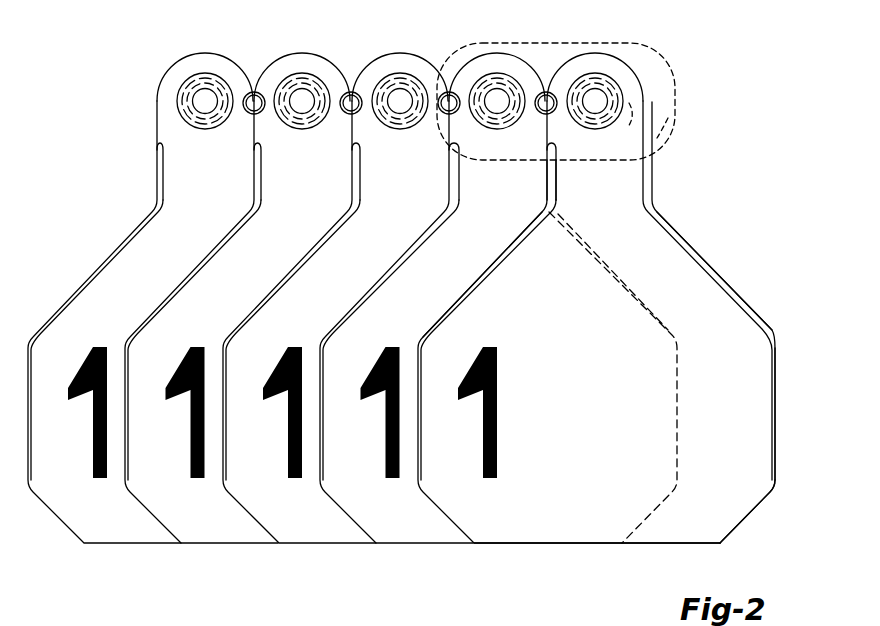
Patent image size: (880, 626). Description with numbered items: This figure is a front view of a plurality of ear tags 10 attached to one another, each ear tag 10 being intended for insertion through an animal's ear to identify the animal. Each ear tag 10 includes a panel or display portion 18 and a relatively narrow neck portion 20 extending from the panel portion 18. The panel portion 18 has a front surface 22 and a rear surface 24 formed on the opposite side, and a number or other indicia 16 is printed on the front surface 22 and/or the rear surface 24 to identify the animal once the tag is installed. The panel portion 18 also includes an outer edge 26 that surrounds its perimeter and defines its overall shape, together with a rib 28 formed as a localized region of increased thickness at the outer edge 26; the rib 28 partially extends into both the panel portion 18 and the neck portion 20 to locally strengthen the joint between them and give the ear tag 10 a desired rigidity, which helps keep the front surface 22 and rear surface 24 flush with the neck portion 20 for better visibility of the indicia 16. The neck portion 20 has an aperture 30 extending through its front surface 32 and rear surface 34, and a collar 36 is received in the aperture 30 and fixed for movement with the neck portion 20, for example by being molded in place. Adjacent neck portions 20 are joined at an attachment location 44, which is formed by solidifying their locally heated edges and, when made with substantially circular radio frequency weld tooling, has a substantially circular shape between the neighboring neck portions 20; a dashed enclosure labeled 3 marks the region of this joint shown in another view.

The ear tag 10 is at (170, 54).
The attachment location 44 is at (351, 106).
The aperture 30 is at (596, 100).
The collar 36 is at (597, 101).
The rear surface 34 is at (673, 117).
The neck portion 20 is at (622, 145).
The section view 3 is at (653, 57).
The front surface 32 is at (592, 147).
The rib 28 is at (698, 262).
The panel portion 18 is at (736, 328).
The indicia 16 is at (746, 372).
The outer edge 26 is at (777, 394).
The rear surface 24 is at (692, 514).
The front surface 22 is at (604, 517).